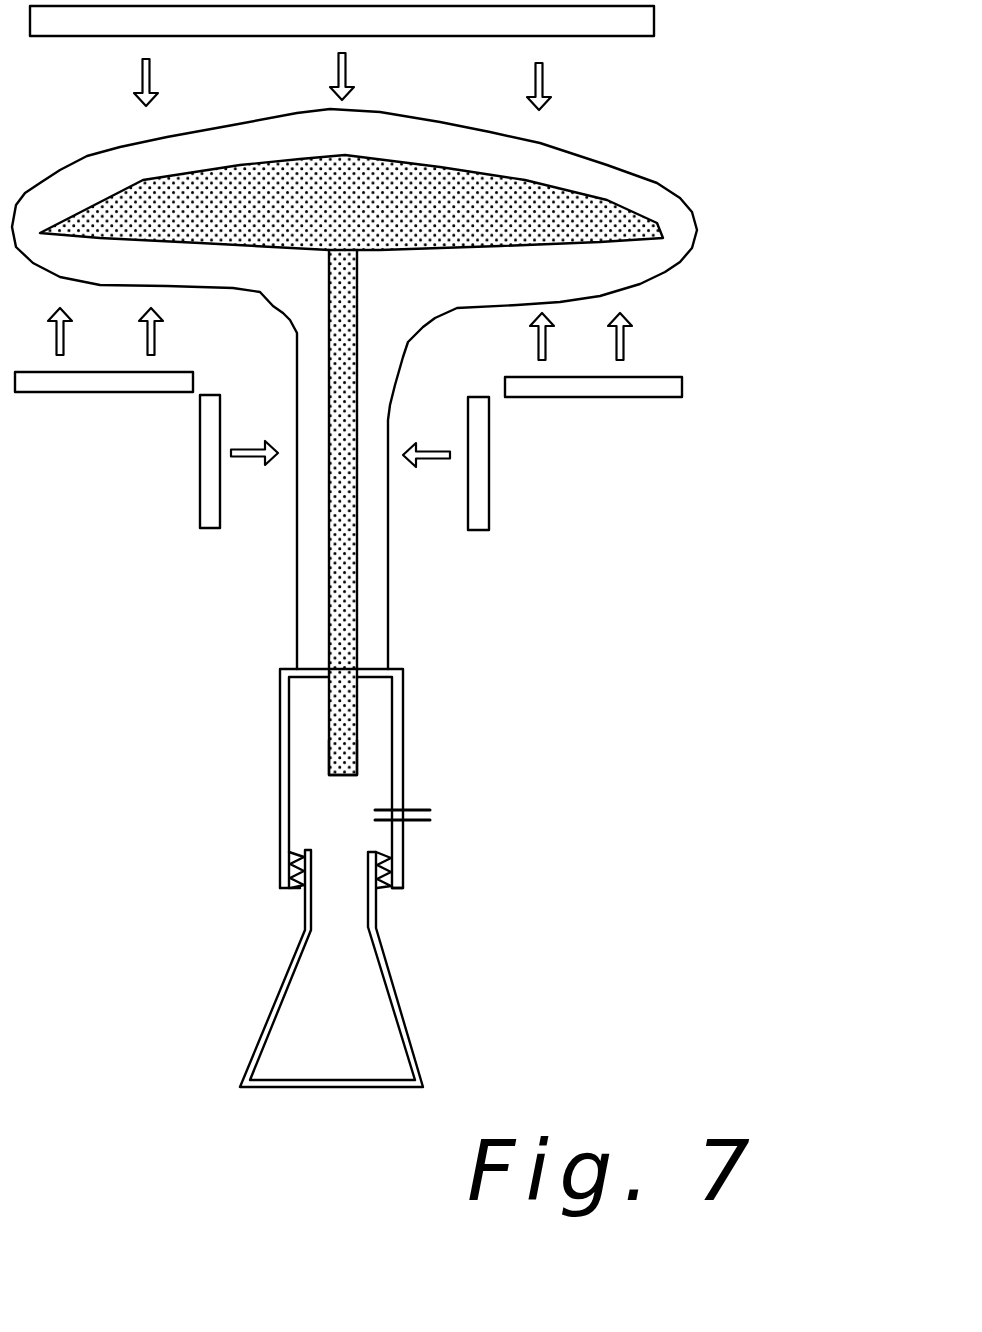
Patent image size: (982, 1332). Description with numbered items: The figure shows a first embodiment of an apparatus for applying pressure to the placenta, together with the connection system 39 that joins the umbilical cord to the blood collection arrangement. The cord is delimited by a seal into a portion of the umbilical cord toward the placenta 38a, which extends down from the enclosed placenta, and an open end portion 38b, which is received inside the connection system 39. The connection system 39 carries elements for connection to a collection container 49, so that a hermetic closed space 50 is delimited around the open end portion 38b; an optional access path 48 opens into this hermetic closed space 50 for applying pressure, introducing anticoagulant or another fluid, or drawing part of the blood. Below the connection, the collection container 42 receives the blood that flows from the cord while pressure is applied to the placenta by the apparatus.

The portion of the umbilical cord toward the placenta 38a is at (345, 621).
The open end portion 38b is at (342, 733).
The connection system 39 is at (282, 683).
The collection container 42 is at (407, 1050).
The access path 48 is at (432, 815).
The elements for connection to a collection container 49 is at (393, 890).
The hermetic closed space 50 is at (318, 807).